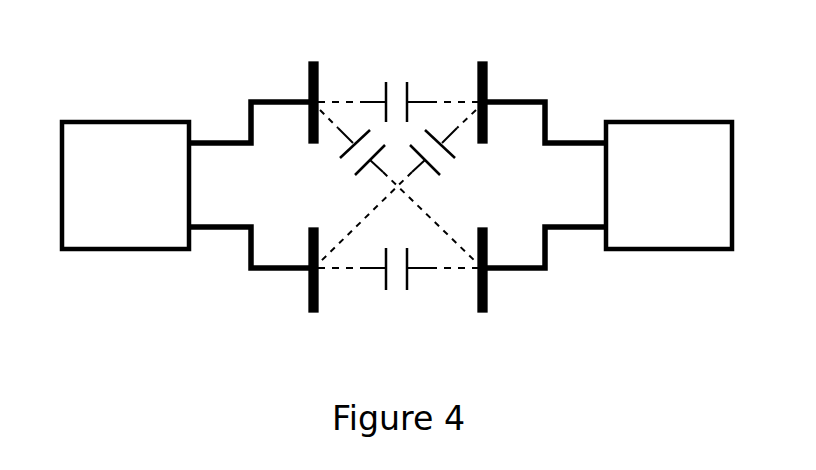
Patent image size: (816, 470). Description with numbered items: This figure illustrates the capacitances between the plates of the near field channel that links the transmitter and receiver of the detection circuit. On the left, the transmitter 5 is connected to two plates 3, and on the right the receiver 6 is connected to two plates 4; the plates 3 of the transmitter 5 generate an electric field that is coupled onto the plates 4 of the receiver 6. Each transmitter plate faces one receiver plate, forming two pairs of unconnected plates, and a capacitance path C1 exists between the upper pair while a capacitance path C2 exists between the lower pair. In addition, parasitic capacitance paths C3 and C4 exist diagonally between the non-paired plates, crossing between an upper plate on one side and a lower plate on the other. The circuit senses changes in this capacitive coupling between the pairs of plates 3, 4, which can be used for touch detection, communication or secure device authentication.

The plates of the transmitter 3 is at (309, 62).
The plates of the receiver 4 is at (486, 62).
The transmitter 5 is at (124, 120).
The receiver 6 is at (670, 120).
The capacitance path C1 is at (398, 77).
The capacitance path C2 is at (398, 294).
The parasitic capacitance path C3 is at (393, 186).
The parasitic capacitance path C4 is at (402, 186).